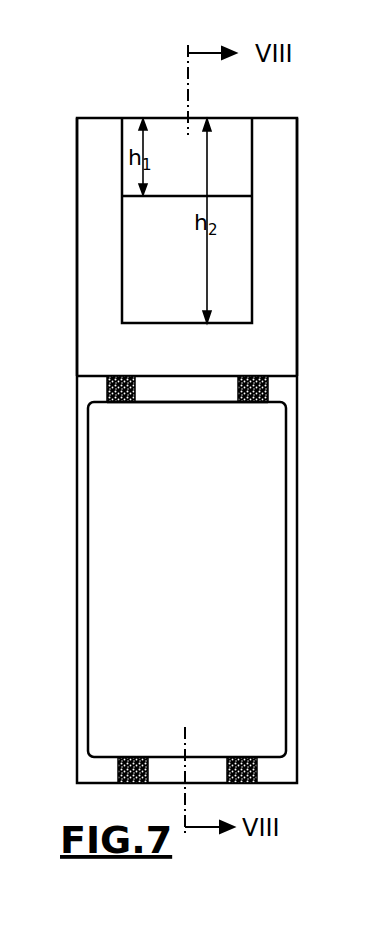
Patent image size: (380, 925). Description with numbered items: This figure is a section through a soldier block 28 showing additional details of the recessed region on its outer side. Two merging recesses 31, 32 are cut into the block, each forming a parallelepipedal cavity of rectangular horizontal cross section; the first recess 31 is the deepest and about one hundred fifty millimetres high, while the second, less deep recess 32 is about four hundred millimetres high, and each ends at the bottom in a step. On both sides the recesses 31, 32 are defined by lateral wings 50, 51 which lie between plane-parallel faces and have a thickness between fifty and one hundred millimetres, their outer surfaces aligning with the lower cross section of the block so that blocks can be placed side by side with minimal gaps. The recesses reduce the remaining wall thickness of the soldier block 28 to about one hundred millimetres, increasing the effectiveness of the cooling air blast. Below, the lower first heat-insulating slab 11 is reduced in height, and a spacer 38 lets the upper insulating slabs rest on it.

The first heat-insulating slab 11 is at (270, 597).
The soldier block 28 is at (280, 323).
The first recess 31 is at (227, 138).
The second recess 32 is at (237, 259).
The spacer 38 is at (107, 388).
The lateral wing 50 is at (280, 203).
The lateral wing 51 is at (100, 204).